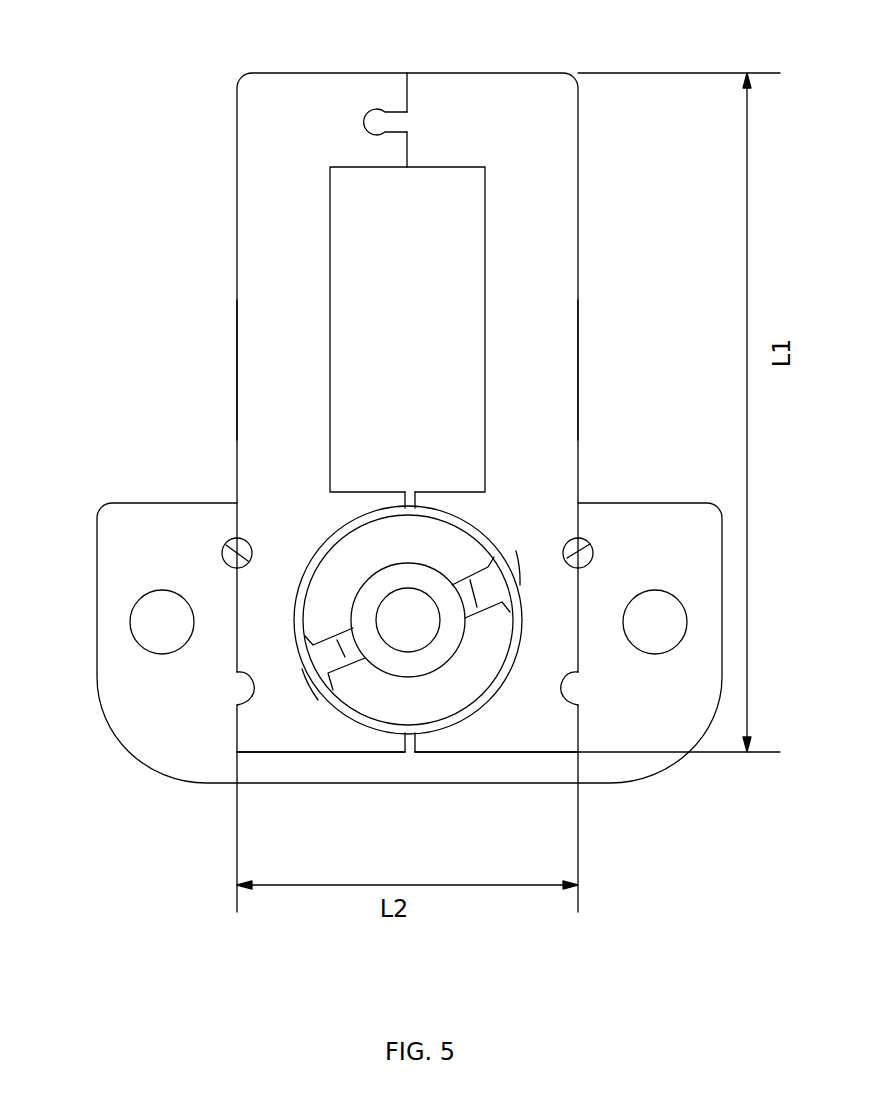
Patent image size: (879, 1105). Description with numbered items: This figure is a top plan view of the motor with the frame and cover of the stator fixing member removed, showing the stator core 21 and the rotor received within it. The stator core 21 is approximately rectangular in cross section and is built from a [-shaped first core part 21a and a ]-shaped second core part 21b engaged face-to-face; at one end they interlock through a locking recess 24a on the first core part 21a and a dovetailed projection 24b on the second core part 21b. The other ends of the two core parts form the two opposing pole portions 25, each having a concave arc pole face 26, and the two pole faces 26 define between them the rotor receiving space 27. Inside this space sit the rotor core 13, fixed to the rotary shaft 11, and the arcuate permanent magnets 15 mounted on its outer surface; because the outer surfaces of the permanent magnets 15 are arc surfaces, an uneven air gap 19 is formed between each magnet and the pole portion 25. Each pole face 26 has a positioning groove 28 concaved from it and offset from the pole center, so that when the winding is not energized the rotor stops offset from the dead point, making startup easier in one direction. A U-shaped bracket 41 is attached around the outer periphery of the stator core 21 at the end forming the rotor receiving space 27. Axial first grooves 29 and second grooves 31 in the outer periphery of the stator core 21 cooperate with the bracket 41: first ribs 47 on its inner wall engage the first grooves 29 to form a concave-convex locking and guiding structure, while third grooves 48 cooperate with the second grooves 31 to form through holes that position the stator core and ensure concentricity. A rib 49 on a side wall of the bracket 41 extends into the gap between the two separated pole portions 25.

The rotary shaft 11 is at (405, 632).
The rotor core 13 is at (387, 587).
The permanent magnet 15 is at (455, 702).
The uneven air gap 19 is at (470, 533).
The stator core 21 is at (586, 253).
The first core part 21a is at (258, 370).
The second core part 21b is at (542, 353).
The locking recess 24a is at (362, 133).
The dovetailed projection 24b is at (378, 118).
The pole portion 25 is at (332, 738).
The pole face 26 is at (295, 620).
The rotor receiving space 27 is at (296, 571).
The positioning groove 28 is at (307, 675).
The first groove 29 is at (243, 683).
The second groove 31 is at (223, 550).
The U-shaped bracket 41 is at (173, 503).
The first rib 47 is at (248, 698).
The third groove 48 is at (223, 562).
The rib 49 is at (405, 750).